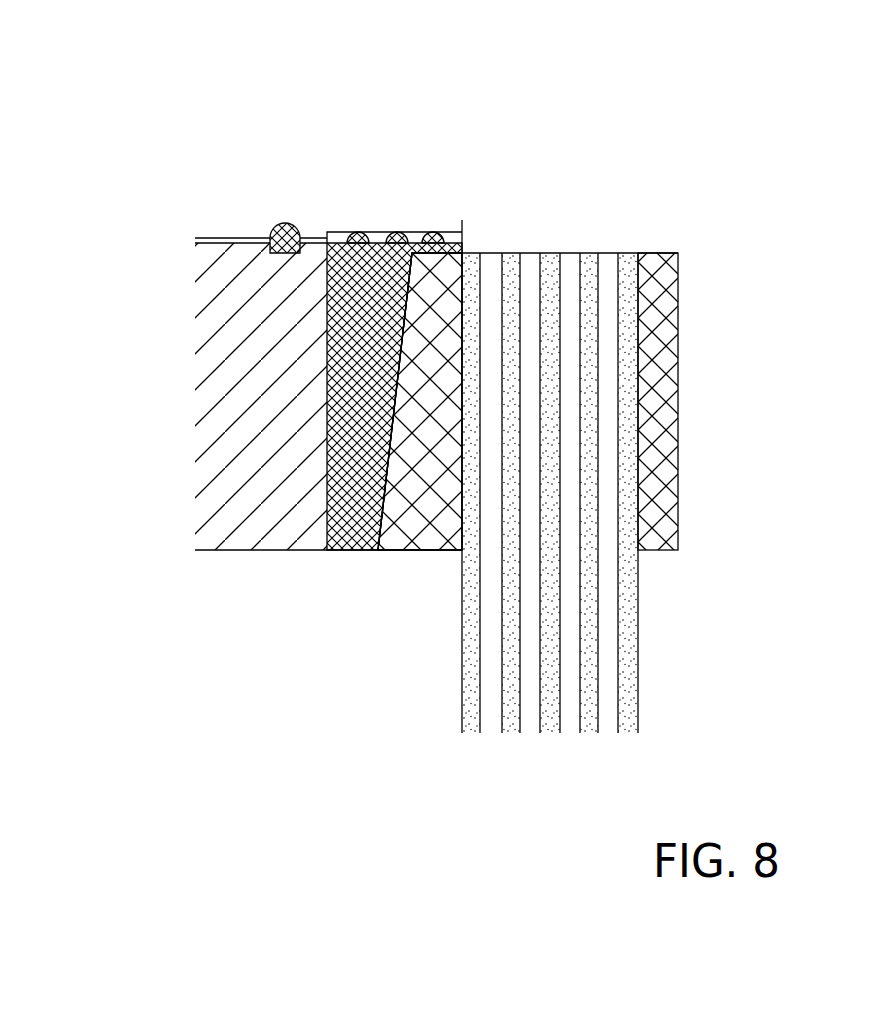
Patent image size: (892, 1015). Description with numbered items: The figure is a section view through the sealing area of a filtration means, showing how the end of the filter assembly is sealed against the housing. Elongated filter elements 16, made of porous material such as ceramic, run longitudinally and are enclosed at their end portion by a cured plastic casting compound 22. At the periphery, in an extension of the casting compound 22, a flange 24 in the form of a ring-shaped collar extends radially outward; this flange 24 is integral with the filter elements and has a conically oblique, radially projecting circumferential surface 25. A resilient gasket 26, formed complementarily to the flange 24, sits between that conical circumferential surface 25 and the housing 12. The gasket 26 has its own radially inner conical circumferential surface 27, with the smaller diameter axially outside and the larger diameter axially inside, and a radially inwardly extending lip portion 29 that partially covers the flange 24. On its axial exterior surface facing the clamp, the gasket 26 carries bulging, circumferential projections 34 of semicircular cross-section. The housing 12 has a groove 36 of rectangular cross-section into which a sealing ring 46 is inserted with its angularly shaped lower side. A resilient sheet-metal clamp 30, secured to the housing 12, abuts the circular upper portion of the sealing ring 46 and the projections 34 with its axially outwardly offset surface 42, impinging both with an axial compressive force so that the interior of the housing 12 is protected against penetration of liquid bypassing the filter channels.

The housing 12 is at (257, 388).
The filter elements 16 is at (544, 758).
The casting compound 22 is at (655, 315).
The flange 24 is at (435, 288).
The circumferential surface 25 is at (393, 430).
The gasket 26 is at (357, 513).
The circumferential surface 27 is at (398, 470).
The lip portion 29 is at (462, 243).
The clamp 30 is at (316, 233).
The projections 34 is at (361, 232).
The groove 36 is at (282, 257).
The axially outwardly offset surface 42 is at (413, 232).
The sealing ring 46 is at (280, 230).